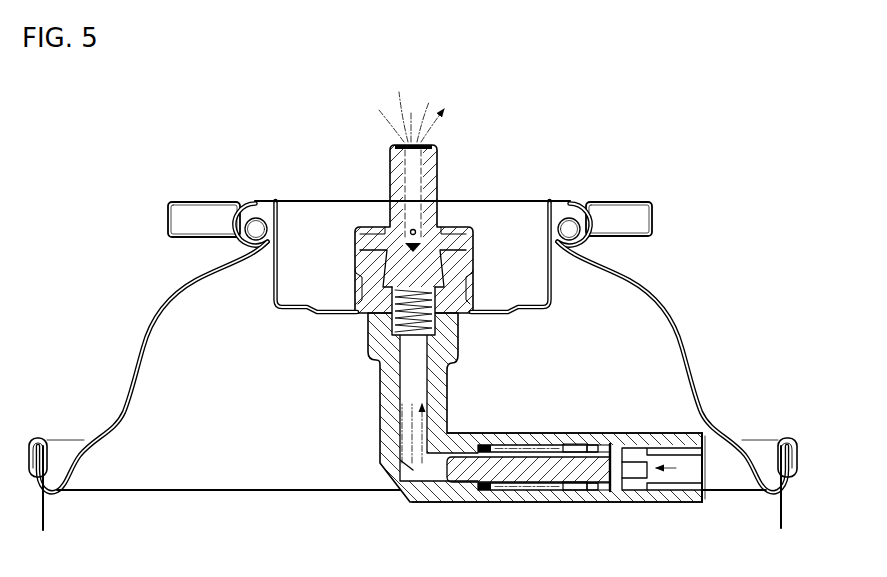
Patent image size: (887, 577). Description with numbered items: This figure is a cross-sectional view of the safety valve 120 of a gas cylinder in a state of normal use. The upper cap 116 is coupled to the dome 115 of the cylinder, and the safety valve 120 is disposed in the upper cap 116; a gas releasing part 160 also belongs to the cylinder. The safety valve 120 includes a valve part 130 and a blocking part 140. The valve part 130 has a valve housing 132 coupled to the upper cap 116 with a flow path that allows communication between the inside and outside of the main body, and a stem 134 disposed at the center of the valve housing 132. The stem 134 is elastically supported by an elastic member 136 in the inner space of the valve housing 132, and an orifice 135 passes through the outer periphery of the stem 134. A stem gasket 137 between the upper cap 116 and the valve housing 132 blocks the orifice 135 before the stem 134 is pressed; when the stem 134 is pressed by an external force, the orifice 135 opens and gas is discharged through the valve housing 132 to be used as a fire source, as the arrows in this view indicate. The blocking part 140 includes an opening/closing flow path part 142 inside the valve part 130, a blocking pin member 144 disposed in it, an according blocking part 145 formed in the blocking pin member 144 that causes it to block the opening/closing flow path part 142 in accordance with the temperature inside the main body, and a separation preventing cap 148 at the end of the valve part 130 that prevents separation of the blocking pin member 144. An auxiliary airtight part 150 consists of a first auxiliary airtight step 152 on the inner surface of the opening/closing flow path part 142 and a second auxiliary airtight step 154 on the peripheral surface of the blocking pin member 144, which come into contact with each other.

The dome 115 is at (175, 278).
The upper cap 116 is at (240, 203).
The safety valve 120 is at (497, 335).
The valve part 130 is at (576, 127).
The valve housing 132 is at (450, 303).
The stem 134 is at (428, 258).
The orifice 135 is at (415, 230).
The elastic member 136 is at (352, 295).
The stem gasket 137 is at (377, 220).
The blocking part 140 is at (806, 320).
The opening/closing flow path part 142 is at (500, 490).
The blocking pin member 144 is at (665, 442).
The according blocking part 145 is at (690, 470).
The separation preventing cap 148 is at (727, 510).
The auxiliary airtight part 150 is at (568, 384).
The first auxiliary airtight step 152 is at (573, 463).
The second auxiliary airtight step 154 is at (548, 443).
The gas releasing part 160 is at (808, 452).